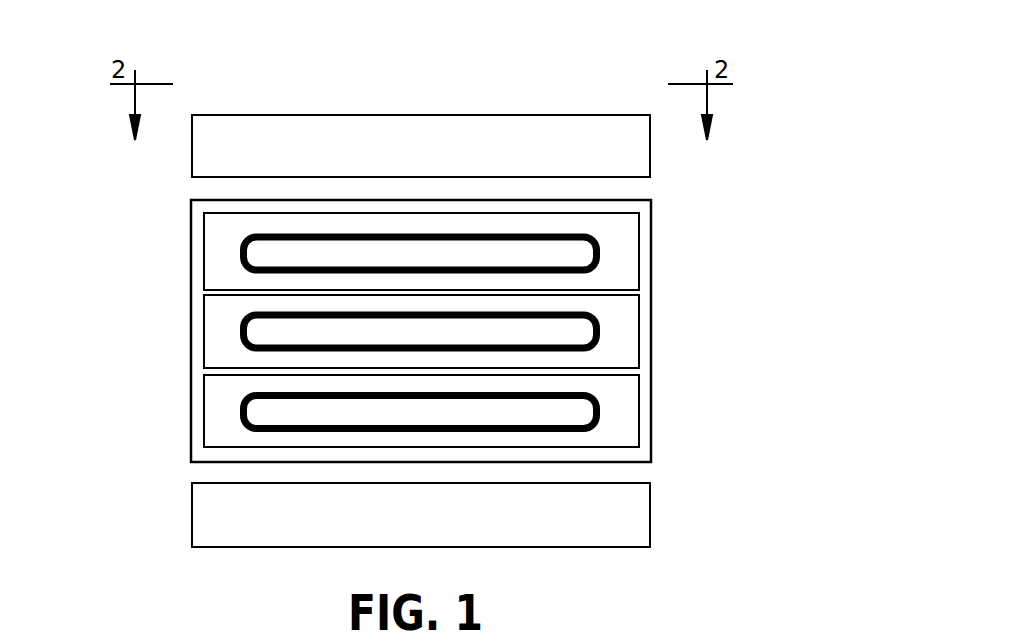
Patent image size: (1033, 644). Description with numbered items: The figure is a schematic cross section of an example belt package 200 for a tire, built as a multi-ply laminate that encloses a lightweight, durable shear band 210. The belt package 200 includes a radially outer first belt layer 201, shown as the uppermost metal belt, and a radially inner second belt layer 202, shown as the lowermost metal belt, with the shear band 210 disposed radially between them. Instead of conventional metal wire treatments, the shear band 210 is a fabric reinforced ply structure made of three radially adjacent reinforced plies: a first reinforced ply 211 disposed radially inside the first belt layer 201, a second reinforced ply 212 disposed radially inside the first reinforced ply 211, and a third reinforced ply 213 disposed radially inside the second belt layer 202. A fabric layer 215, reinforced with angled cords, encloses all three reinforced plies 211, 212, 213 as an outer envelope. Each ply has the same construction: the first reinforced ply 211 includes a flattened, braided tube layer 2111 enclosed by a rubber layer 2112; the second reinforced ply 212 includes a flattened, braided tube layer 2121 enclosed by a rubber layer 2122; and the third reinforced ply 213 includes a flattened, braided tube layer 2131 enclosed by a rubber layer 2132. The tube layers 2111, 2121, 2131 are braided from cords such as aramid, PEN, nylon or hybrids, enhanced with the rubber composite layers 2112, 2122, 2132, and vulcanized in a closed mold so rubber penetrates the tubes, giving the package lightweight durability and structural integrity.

The belt package 200 is at (778, 88).
The first belt layer 201 is at (322, 158).
The second belt layer 202 is at (328, 527).
The shear band 210 is at (745, 262).
The first reinforced ply 211 is at (188, 261).
The second reinforced ply 212 is at (188, 335).
The third reinforced ply 213 is at (188, 421).
The fabric layer 215 is at (652, 430).
The flattened braided tube layer 2111 is at (598, 236).
The rubber layer 2112 is at (639, 263).
The flattened braided tube layer 2121 is at (598, 335).
The rubber layer 2122 is at (639, 322).
The flattened braided tube layer 2131 is at (598, 408).
The rubber layer 2132 is at (639, 383).